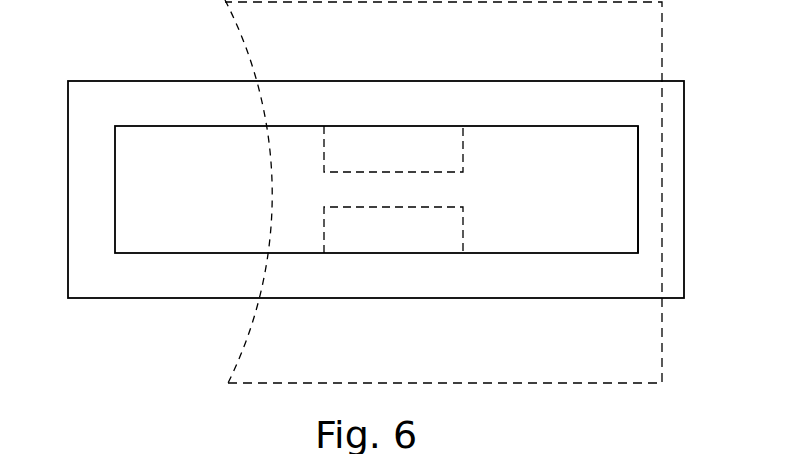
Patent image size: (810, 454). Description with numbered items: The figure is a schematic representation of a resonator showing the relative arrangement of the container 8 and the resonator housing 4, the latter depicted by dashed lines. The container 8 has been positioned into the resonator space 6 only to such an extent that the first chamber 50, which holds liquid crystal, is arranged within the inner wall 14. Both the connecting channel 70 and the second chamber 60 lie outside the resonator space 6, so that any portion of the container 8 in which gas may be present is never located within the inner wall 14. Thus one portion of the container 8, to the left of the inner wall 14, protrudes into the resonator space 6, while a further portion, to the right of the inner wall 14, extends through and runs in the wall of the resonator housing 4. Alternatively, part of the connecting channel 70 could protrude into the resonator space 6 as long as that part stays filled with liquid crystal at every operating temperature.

The resonator housing 4 is at (628, 348).
The resonator space 6 is at (356, 223).
The container 8 is at (107, 97).
The inner wall 14 is at (241, 368).
The first chamber 50 is at (180, 236).
The second chamber 60 is at (555, 233).
The connecting channel 70 is at (397, 233).